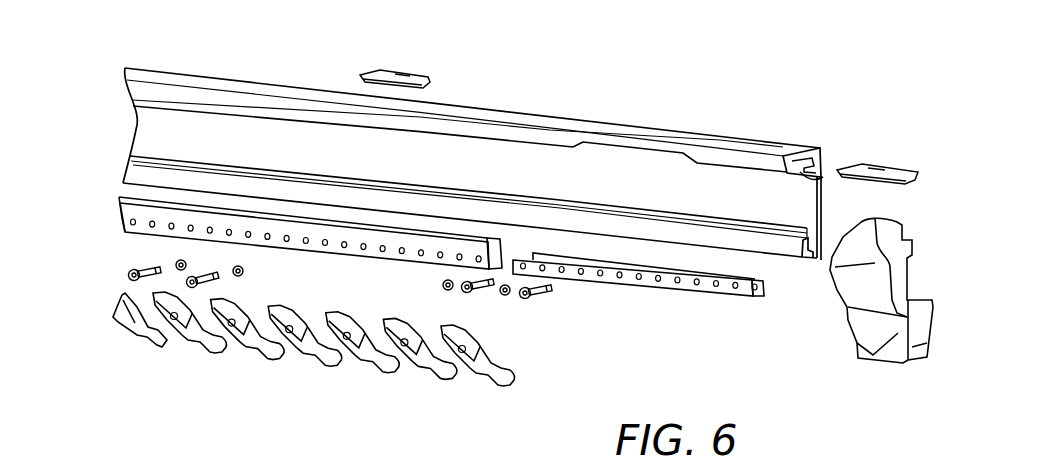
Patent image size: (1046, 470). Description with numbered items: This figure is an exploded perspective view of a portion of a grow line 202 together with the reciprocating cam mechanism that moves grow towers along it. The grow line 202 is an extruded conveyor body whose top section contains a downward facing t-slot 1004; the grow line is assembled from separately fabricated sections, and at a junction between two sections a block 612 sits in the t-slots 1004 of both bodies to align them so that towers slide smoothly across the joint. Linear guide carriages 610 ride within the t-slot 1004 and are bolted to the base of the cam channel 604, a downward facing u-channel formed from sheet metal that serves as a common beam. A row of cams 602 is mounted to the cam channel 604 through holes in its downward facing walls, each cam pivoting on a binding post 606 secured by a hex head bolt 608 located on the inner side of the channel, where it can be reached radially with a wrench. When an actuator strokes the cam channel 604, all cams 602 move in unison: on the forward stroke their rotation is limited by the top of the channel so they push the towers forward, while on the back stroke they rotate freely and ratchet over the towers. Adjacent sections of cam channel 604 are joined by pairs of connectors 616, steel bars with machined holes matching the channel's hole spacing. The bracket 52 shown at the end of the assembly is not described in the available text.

The grow line 202 is at (667, 132).
The t-slot 1004 is at (823, 177).
The cam channel 604 is at (123, 212).
The connectors 616 is at (745, 295).
The linear guide carriages 610 is at (397, 73).
The block 612 is at (893, 167).
The end bracket 52 is at (895, 353).
The cams 602 is at (430, 370).
The binding post 606 is at (243, 270).
The hex head bolt 608 is at (130, 272).